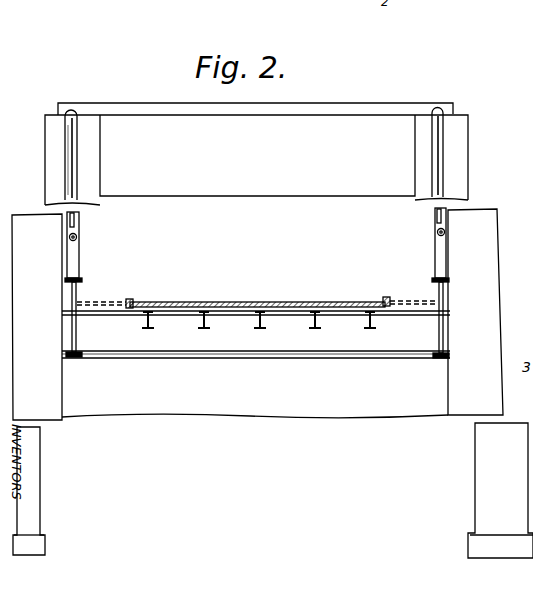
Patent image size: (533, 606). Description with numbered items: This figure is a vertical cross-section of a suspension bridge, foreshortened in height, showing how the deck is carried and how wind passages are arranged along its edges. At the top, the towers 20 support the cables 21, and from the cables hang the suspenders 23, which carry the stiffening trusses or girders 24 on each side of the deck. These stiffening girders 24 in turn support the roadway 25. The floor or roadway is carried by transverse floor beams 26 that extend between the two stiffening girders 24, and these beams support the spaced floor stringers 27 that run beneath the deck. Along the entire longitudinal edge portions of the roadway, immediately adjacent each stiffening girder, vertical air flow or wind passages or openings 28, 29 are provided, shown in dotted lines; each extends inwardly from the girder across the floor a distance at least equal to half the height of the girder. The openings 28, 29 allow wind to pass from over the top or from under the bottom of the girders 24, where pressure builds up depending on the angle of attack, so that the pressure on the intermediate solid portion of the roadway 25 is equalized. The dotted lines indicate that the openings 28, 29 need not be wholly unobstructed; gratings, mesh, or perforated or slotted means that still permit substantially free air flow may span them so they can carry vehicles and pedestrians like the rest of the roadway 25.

The tower 20 is at (47, 160).
The cable 21 is at (68, 135).
The suspender 23 is at (67, 253).
The stiffening girder 24 is at (72, 329).
The roadway 25 is at (280, 302).
The transverse floor beam 26 is at (241, 352).
The floor stringer 27 is at (150, 327).
The wind opening 28 is at (95, 302).
The wind opening 29 is at (393, 302).